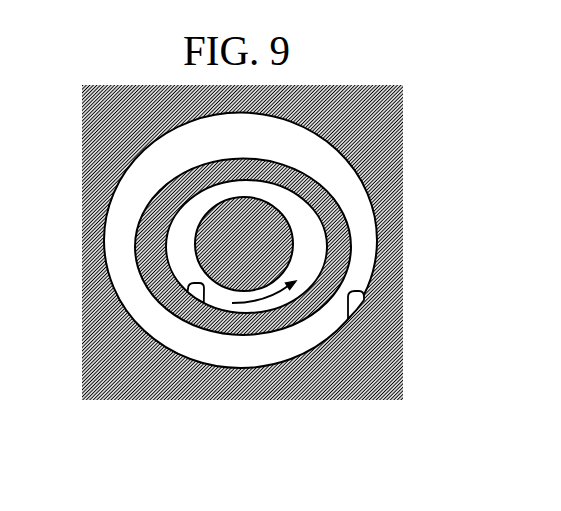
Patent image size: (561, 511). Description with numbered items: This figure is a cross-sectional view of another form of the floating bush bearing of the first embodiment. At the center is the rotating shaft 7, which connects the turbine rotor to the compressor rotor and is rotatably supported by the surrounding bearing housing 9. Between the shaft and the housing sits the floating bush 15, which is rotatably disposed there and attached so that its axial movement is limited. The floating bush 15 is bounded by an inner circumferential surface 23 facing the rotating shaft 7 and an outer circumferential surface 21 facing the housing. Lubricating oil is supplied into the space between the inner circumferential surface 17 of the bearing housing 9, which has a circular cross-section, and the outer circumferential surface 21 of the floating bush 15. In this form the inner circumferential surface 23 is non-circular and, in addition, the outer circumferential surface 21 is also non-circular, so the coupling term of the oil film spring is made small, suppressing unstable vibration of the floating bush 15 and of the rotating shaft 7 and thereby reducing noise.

The bearing housing 9 is at (387, 143).
The rotating shaft 7 is at (198, 230).
The floating bush 15 is at (353, 242).
The outer circumferential surface 21 is at (283, 330).
The inner circumferential surface 17 is at (367, 292).
The inner circumferential surface 23 is at (187, 297).